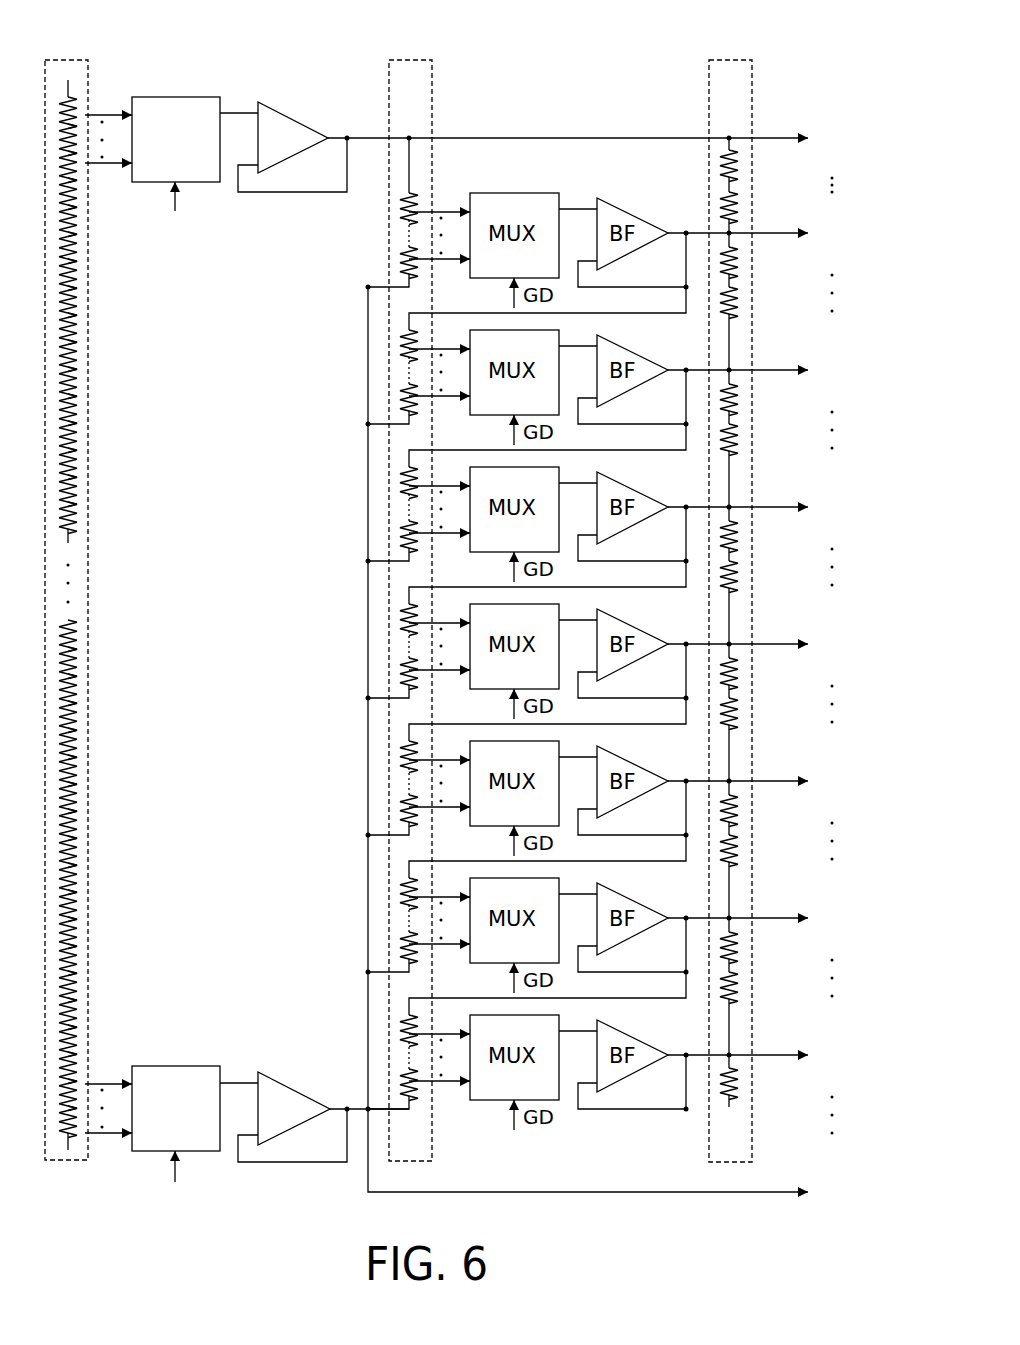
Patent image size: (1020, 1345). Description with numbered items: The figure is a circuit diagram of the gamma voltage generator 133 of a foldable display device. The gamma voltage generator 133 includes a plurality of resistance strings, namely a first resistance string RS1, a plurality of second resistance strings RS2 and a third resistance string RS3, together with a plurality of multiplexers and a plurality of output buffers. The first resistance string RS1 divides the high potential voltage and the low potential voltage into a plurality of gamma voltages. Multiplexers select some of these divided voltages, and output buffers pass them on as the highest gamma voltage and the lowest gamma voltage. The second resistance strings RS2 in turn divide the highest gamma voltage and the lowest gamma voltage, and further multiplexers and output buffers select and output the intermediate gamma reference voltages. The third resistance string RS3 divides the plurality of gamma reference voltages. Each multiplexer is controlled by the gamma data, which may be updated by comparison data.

The gamma voltage generator 133 is at (851, 29).
The first resistance string RS1 is at (88, 68).
The second resistance string RS2 is at (403, 60).
The third resistance string RS3 is at (723, 60).